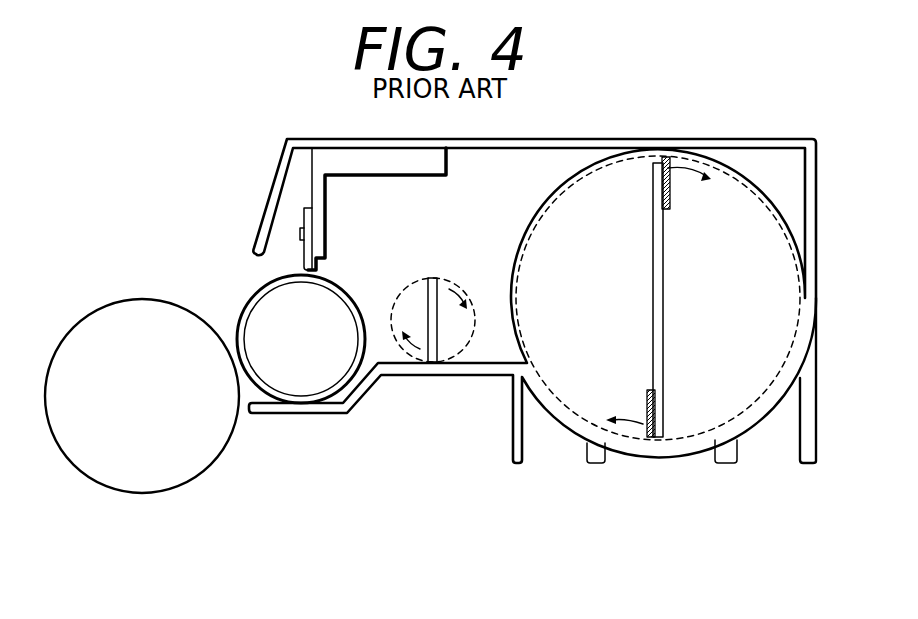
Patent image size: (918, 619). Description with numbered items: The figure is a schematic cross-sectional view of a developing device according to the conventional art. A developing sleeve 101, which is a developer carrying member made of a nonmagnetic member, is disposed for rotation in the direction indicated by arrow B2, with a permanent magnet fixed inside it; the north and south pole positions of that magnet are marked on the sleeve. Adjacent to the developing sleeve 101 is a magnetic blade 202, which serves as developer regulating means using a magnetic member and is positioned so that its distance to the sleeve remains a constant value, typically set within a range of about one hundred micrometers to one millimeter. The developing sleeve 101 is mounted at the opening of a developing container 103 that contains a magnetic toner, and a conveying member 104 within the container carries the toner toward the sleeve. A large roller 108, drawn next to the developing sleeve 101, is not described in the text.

The developing sleeve 101 is at (355, 298).
The developing container 103 is at (750, 138).
The conveying member 104 is at (437, 340).
The photosensitive drum 108 is at (128, 300).
The magnetic blade 202 is at (302, 232).
The rotation direction of roller B2 is at (262, 262).